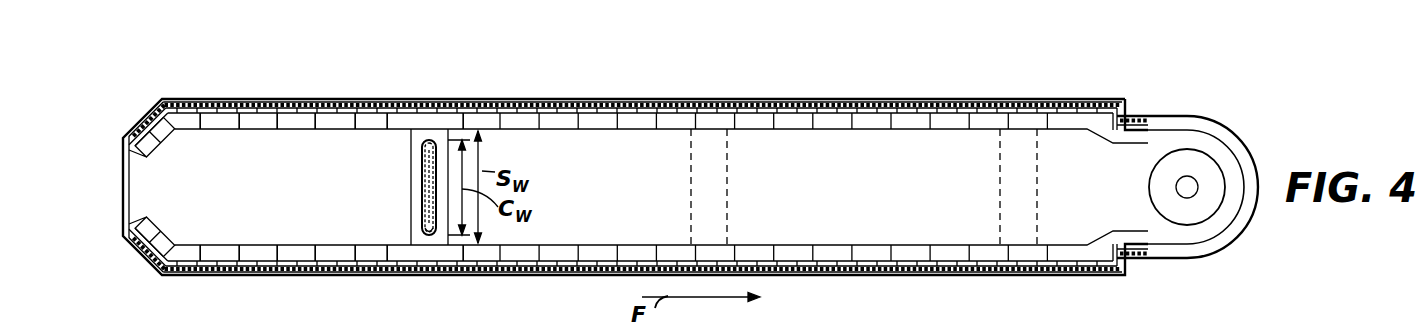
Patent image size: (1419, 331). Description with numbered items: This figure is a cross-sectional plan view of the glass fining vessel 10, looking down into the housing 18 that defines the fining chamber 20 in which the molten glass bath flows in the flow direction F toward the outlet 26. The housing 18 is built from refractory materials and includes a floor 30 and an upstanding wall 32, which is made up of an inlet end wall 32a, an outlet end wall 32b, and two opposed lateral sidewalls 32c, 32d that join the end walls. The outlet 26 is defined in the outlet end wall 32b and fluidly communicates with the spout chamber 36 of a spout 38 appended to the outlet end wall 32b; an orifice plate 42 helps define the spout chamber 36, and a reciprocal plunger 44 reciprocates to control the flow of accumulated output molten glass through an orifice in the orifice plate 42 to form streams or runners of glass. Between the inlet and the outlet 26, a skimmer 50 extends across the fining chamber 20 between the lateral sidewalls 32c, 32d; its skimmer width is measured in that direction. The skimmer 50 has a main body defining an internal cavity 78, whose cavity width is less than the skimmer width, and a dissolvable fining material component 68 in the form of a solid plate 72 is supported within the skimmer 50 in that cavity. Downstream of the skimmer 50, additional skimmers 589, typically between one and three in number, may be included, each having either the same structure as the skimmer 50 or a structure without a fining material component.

The glass fining vessel 10 is at (220, 48).
The housing 18 is at (136, 114).
The fining chamber 20 is at (253, 126).
The outlet 26 is at (1100, 244).
The floor 30 is at (621, 194).
The upstanding wall 32 is at (421, 92).
The inlet end wall 32a is at (122, 194).
The outlet end wall 32b is at (1135, 110).
The lateral sidewall 32c is at (560, 122).
The lateral sidewall 32d is at (505, 258).
The spout chamber 36 is at (1215, 220).
The spout 38 is at (1190, 270).
The orifice plate 42 is at (1193, 160).
The reciprocal plunger 44 is at (1185, 191).
The skimmer 50 is at (403, 144).
The dissolvable fining material component 68 is at (414, 158).
The solid plate 72 is at (426, 173).
The internal cavity 78 is at (425, 196).
The additional skimmers 589 is at (717, 156).